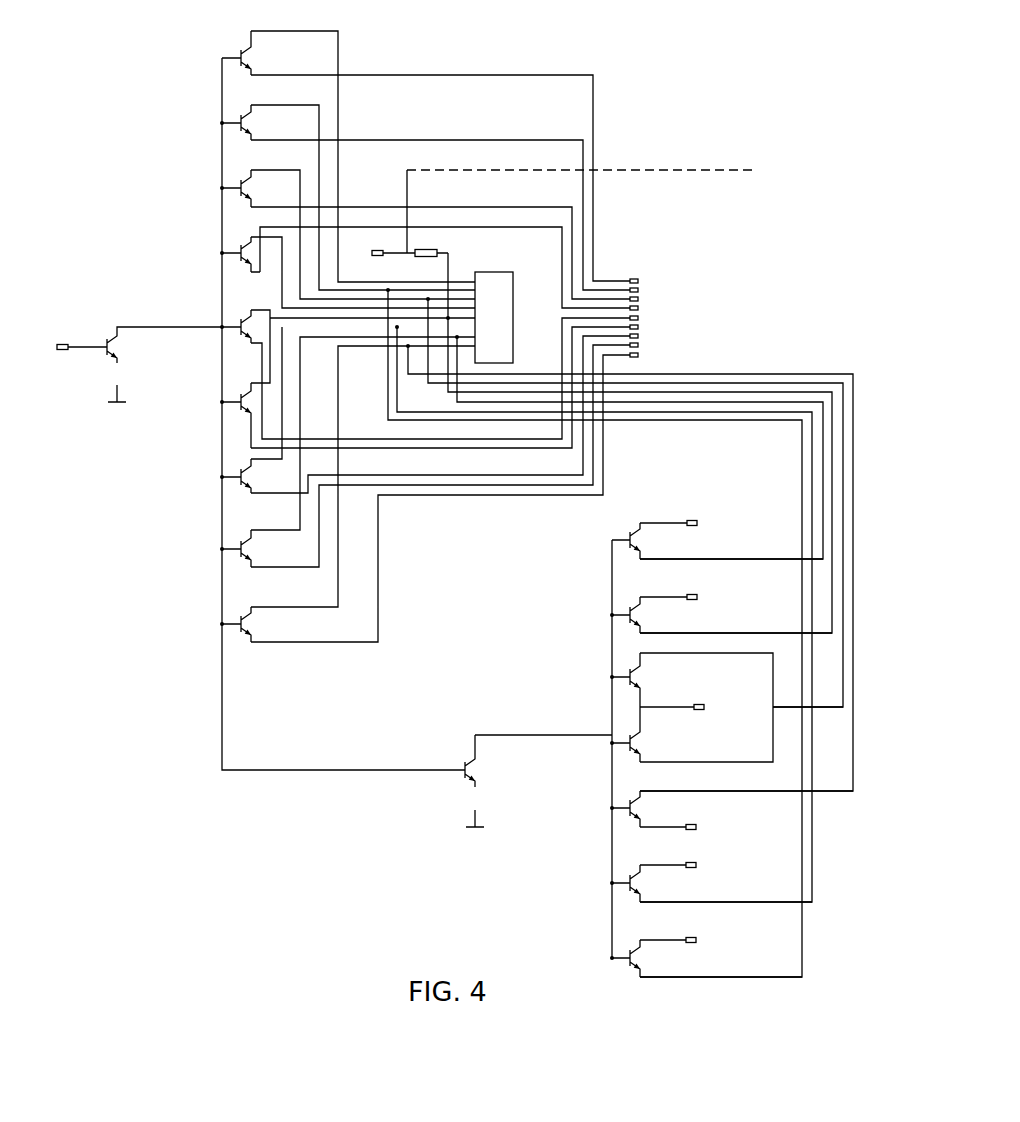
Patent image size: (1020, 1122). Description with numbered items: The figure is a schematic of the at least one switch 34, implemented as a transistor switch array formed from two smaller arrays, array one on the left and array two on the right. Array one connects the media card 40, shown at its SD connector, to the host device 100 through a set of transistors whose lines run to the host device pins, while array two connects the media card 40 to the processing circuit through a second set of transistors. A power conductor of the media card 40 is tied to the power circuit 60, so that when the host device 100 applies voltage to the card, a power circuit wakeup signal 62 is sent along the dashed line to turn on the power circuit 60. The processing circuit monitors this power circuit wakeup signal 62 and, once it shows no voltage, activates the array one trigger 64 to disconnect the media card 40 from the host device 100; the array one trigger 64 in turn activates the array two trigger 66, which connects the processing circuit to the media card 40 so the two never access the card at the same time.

The switch 34 is at (241, 818).
The media card 40 is at (515, 318).
The power circuit 60 is at (610, 161).
The power circuit wakeup signal 62 is at (402, 248).
The array 1 trigger 64 is at (67, 332).
The array 2 trigger 66 is at (457, 762).
The host device 100 is at (704, 318).